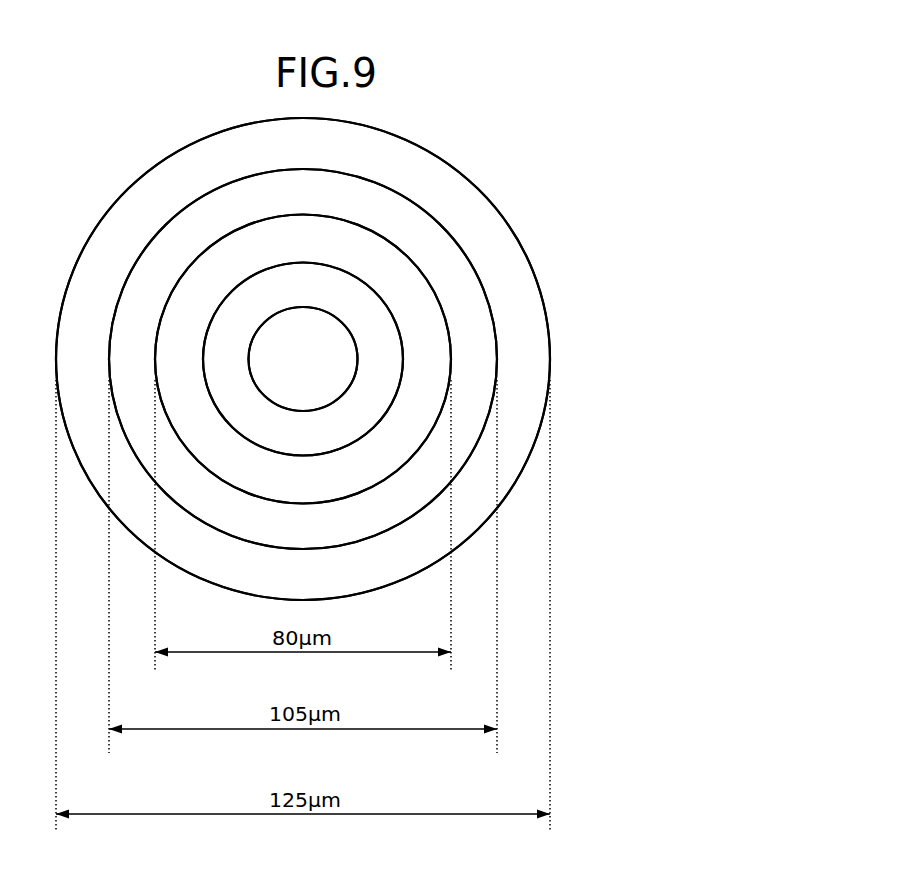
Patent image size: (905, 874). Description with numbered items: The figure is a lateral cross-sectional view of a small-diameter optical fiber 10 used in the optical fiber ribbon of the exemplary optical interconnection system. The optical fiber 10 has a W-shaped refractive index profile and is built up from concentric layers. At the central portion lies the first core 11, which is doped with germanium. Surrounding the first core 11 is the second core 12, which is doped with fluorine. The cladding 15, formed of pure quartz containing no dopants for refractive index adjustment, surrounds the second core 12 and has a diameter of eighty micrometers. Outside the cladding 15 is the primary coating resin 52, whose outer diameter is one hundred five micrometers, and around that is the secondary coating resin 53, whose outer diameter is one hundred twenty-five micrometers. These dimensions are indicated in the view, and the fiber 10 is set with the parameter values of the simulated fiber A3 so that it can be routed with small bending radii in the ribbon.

The optical fiber 10 is at (477, 183).
The first core 11 is at (321, 368).
The second core 12 is at (377, 378).
The cladding 15 is at (427, 348).
The primary coating resin 52 is at (463, 305).
The secondary coating resin 53 is at (495, 247).